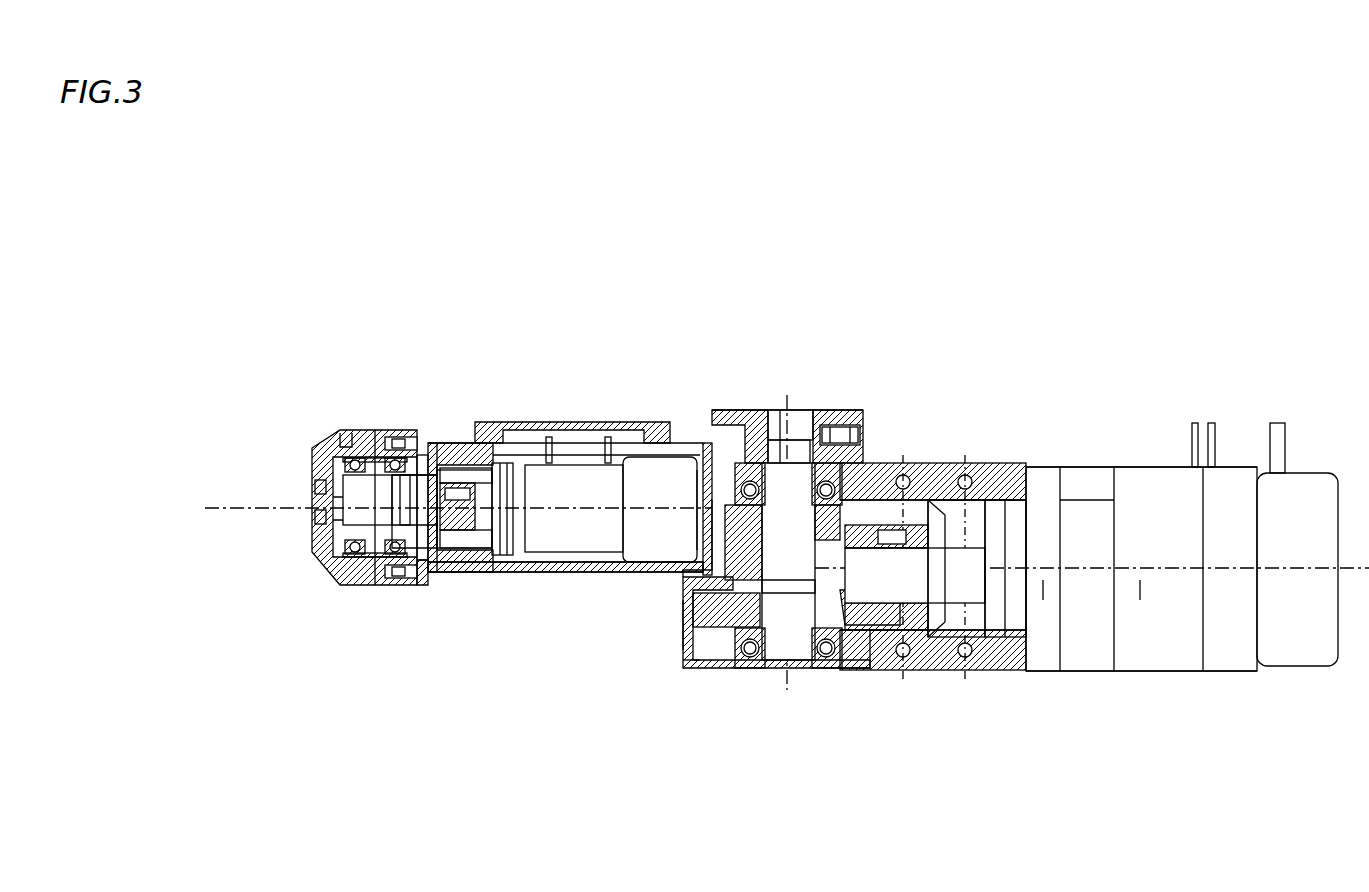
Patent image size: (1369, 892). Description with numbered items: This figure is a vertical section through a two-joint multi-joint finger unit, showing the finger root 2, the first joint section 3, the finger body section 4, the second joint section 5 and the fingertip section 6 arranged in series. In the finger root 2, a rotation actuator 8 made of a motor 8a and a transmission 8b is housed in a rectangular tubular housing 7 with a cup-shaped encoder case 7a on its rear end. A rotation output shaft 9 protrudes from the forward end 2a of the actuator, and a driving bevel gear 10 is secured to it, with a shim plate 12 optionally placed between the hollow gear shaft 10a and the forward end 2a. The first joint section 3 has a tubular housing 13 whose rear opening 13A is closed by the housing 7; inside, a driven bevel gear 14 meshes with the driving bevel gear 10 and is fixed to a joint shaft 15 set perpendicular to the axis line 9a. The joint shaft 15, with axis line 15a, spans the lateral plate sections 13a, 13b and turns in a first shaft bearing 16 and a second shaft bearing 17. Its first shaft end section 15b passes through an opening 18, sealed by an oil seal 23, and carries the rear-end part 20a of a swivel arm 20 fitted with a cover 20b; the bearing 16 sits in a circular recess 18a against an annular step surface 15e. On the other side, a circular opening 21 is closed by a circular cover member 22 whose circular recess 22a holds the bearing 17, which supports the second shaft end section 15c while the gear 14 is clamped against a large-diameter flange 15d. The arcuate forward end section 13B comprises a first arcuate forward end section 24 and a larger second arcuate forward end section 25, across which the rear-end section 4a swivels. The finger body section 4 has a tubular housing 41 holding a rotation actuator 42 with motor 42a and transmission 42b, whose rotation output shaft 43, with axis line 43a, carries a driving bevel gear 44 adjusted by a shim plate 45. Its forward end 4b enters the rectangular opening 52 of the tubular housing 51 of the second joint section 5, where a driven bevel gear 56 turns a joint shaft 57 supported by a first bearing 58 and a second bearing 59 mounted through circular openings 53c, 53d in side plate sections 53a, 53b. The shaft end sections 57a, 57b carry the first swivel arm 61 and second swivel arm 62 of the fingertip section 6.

The finger root 2 is at (1087, 352).
The forward end 2a is at (950, 616).
The first joint section 3 is at (853, 398).
The finger body section 4 is at (553, 406).
The rear-end section 4a is at (625, 445).
The forward end 4b is at (383, 583).
The second joint section 5 is at (431, 428).
The fingertip section 6 is at (316, 428).
The tubular housing 7 is at (1187, 640).
The encoder case 7a is at (1305, 640).
The rotation actuator 8 is at (1120, 757).
The motor 8a is at (1145, 605).
The transmission 8b is at (1050, 600).
The rotation output shaft 9 is at (908, 606).
The axis line 9a is at (1032, 565).
The driving bevel gear 10 is at (913, 532).
The hollow gear shaft 10a is at (922, 534).
The shim plate 12 is at (922, 530).
The tubular housing 13 is at (883, 470).
The opening 13A is at (1022, 500).
The forward end section 13B is at (610, 712).
The lateral plate section 13a is at (735, 410).
The lateral plate section 13b is at (868, 662).
The driven bevel gear 14 is at (845, 690).
The joint shaft 15 is at (790, 650).
The axis line 15a is at (798, 410).
The first shaft end section 15b is at (775, 410).
The second shaft end section 15c is at (770, 668).
The large-diameter flange 15d is at (750, 545).
The annular step surface 15e is at (733, 512).
The first shaft bearing 16 is at (706, 420).
The second shaft bearing 17 is at (745, 642).
The opening 18 is at (747, 410).
The circular recess 18a is at (855, 440).
The swivel arm 20 is at (642, 444).
The rear-end part 20a is at (845, 412).
The cover 20b is at (547, 445).
The circular opening 21 is at (700, 662).
The circular cover member 22 is at (735, 670).
The circular recess 22a is at (830, 685).
The oil seal 23 is at (781, 410).
The first arcuate forward end section 24 is at (712, 560).
The second arcuate forward end section 25 is at (672, 636).
The tubular housing 41 is at (540, 530).
The rotation actuator 42 is at (443, 712).
The motor 42a is at (470, 590).
The transmission 42b is at (410, 585).
The rotation output shaft 43 is at (455, 450).
The axis line 43a is at (512, 500).
The driving bevel gear 44 is at (401, 440).
The shim plate 45 is at (437, 445).
The tubular housing 51 is at (449, 445).
The rectangular opening 52 is at (487, 445).
The side plate section 53a is at (340, 466).
The side plate section 53b is at (340, 557).
The circular opening 53c is at (340, 462).
The circular opening 53d is at (350, 572).
The driven bevel gear 56 is at (338, 545).
The joint shaft 57 is at (340, 505).
The shaft end section 57a is at (367, 440).
The shaft end section 57b is at (398, 580).
The first bearing 58 is at (348, 440).
The second bearing 59 is at (345, 558).
The first swivel arm 61 is at (316, 472).
The second swivel arm 62 is at (318, 536).